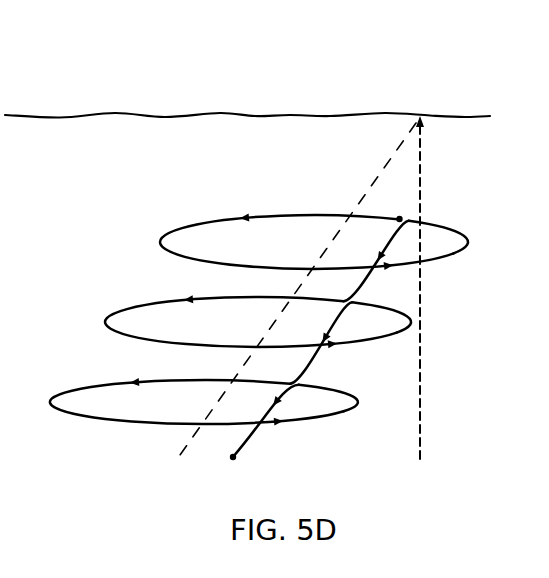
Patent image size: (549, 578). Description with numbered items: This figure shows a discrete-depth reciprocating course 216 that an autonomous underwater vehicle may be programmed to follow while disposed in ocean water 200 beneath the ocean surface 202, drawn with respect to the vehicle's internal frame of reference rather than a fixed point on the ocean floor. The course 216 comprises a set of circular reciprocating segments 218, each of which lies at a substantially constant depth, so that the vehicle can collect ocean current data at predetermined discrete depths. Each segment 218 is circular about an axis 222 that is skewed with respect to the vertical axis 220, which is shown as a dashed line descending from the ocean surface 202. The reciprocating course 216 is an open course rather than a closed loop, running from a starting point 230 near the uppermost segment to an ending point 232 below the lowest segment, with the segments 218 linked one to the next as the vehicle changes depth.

The ocean water 200 is at (240, 82).
The ocean surface 202 is at (266, 113).
The discrete-depth reciprocating course 216 is at (213, 220).
The circular reciprocating segment 218 is at (438, 262).
The vertical axis 220 is at (423, 185).
The axis 222 is at (381, 174).
The starting point 230 is at (396, 215).
The ending point 232 is at (233, 458).